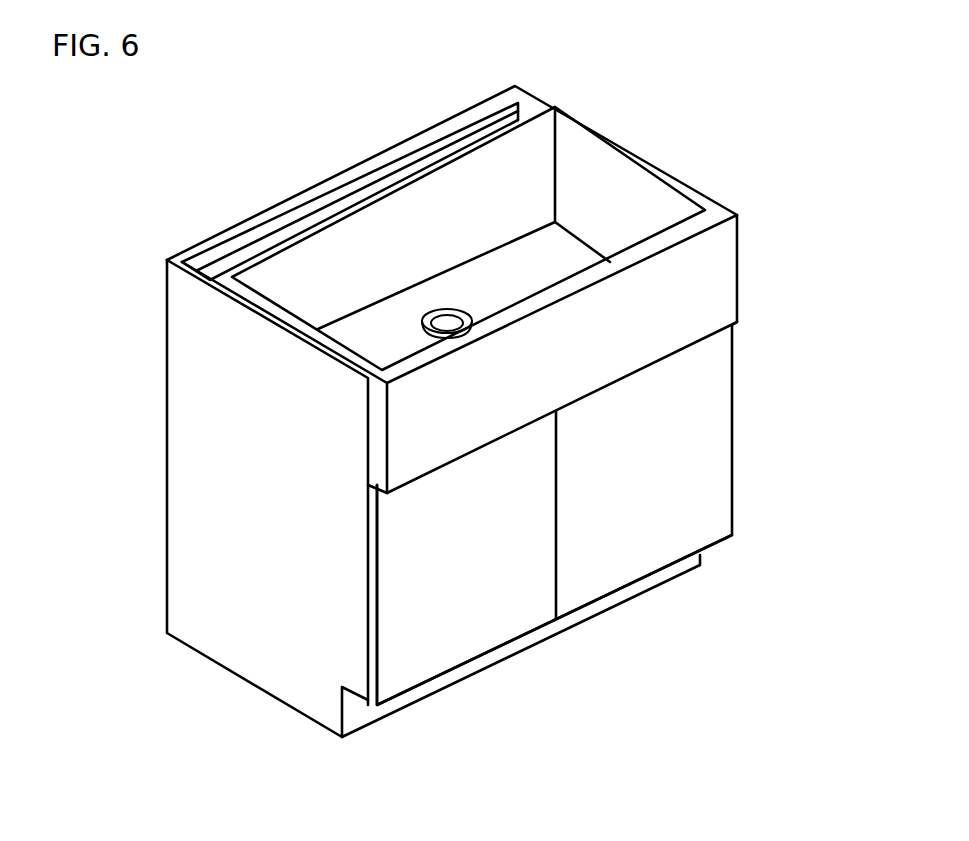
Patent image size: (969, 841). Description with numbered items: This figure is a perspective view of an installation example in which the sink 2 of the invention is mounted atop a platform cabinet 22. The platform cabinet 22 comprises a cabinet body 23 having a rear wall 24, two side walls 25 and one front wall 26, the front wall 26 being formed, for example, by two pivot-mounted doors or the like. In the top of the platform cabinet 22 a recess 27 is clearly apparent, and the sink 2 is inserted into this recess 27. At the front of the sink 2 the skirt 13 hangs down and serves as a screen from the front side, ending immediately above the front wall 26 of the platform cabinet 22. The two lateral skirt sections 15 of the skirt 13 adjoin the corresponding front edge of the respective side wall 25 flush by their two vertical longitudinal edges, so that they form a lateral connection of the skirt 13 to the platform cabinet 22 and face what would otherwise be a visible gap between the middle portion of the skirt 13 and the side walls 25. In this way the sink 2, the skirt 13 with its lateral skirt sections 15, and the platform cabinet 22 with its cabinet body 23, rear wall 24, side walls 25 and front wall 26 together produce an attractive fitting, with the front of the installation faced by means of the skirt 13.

The sink 2 is at (444, 421).
The skirt 13 is at (682, 285).
The lateral skirt sections 15 is at (738, 253).
The platform cabinet 22 is at (392, 425).
The cabinet body 23 is at (377, 167).
The rear wall 24 is at (238, 228).
The side walls 25 is at (195, 569).
The front wall 26 is at (468, 628).
The recess 27 is at (443, 147).